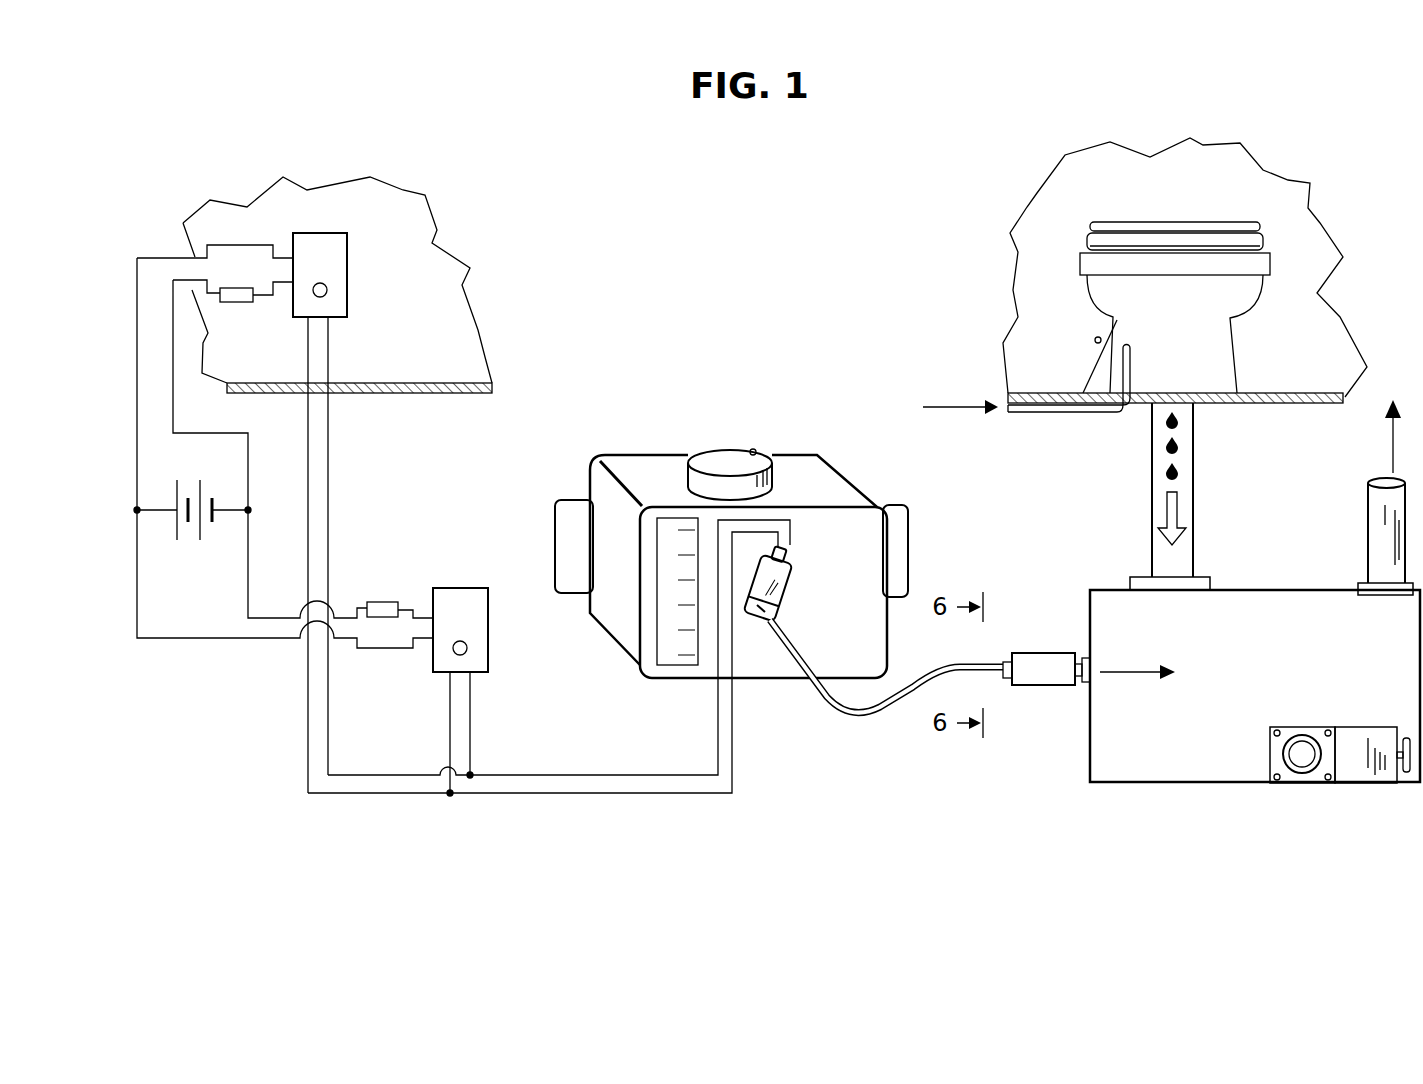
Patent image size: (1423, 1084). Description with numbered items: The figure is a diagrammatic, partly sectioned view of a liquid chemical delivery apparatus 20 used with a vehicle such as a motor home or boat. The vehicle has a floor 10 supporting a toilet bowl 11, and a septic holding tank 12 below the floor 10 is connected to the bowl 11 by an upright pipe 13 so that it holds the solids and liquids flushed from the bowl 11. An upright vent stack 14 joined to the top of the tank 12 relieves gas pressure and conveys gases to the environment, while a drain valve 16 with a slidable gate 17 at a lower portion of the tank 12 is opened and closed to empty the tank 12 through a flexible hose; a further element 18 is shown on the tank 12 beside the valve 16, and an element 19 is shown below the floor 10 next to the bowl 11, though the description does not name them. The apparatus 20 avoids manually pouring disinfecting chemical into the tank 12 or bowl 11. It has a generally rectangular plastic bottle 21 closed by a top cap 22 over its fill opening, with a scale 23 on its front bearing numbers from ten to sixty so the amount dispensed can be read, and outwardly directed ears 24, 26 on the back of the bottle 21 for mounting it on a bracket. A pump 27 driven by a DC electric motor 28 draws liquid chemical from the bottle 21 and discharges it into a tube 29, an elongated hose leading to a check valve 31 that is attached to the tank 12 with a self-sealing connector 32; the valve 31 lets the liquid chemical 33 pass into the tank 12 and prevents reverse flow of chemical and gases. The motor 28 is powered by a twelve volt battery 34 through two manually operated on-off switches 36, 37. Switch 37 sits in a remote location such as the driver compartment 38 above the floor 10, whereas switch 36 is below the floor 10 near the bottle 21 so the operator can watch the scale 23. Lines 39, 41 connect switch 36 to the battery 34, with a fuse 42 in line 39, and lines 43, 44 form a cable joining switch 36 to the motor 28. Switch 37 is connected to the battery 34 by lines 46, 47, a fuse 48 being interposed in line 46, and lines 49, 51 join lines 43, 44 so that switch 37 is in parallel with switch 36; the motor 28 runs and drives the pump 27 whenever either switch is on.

The floor 10 is at (473, 393).
The toilet bowl 11 is at (1240, 293).
The septic holding tank 12 is at (1142, 765).
The upright pipe 13 is at (1195, 467).
The vent stack 14 is at (1378, 535).
The drain valve 16 is at (1345, 767).
The slidable gate 17 is at (1405, 787).
The fan 18 is at (1300, 767).
The foot pedal 19 is at (1063, 415).
The liquid chemical delivery apparatus 20 is at (810, 363).
The bottle 21 is at (660, 478).
The top cap 22 is at (740, 452).
The scale 23 is at (657, 665).
The ear 24 is at (578, 575).
The ear 26 is at (900, 542).
The pump 27 is at (757, 617).
The DC electric motor 28 is at (792, 567).
The tube 29 is at (867, 713).
The check valve 31 is at (1043, 650).
The connector 32 is at (1083, 685).
The liquid chemical 33 is at (1123, 672).
The battery 34 is at (188, 540).
The on-off switch 36 is at (450, 588).
The on-off switch 37 is at (347, 235).
The driver compartment 38 is at (383, 313).
The line 39 is at (268, 615).
The line 41 is at (217, 638).
The fuse 42 is at (382, 602).
The line 43 is at (565, 775).
The line 44 is at (528, 797).
The line 46 is at (173, 397).
The line 47 is at (170, 257).
The fuse 48 is at (243, 303).
The line 49 is at (328, 727).
The line 51 is at (306, 720).